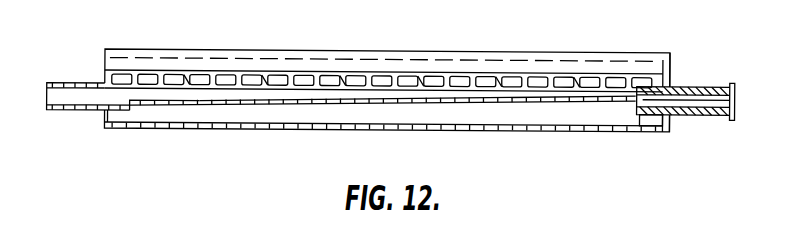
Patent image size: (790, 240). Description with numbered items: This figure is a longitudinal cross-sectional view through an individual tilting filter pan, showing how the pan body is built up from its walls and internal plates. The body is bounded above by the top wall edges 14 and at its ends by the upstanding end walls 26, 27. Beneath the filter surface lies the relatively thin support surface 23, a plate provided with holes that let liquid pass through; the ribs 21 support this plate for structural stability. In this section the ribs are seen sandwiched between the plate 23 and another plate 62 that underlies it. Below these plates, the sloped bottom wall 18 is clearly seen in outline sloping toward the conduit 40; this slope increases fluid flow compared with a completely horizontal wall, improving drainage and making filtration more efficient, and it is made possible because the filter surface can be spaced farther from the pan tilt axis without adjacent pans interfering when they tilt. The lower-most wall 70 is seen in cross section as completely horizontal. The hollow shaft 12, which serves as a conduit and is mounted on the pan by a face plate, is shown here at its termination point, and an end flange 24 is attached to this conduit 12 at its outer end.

The hollow shaft 12 is at (682, 88).
The top wall edges 14 is at (240, 49).
The bottom pan wall 18 is at (165, 100).
The ribs 21 is at (233, 84).
The support surface 23 is at (168, 74).
The end flange 24 is at (740, 88).
The upstanding end wall 26 is at (104, 50).
The upstanding end wall 27 is at (670, 58).
The conduit 40 is at (87, 75).
The plate 62 is at (313, 90).
The lower-most wall 70 is at (251, 128).